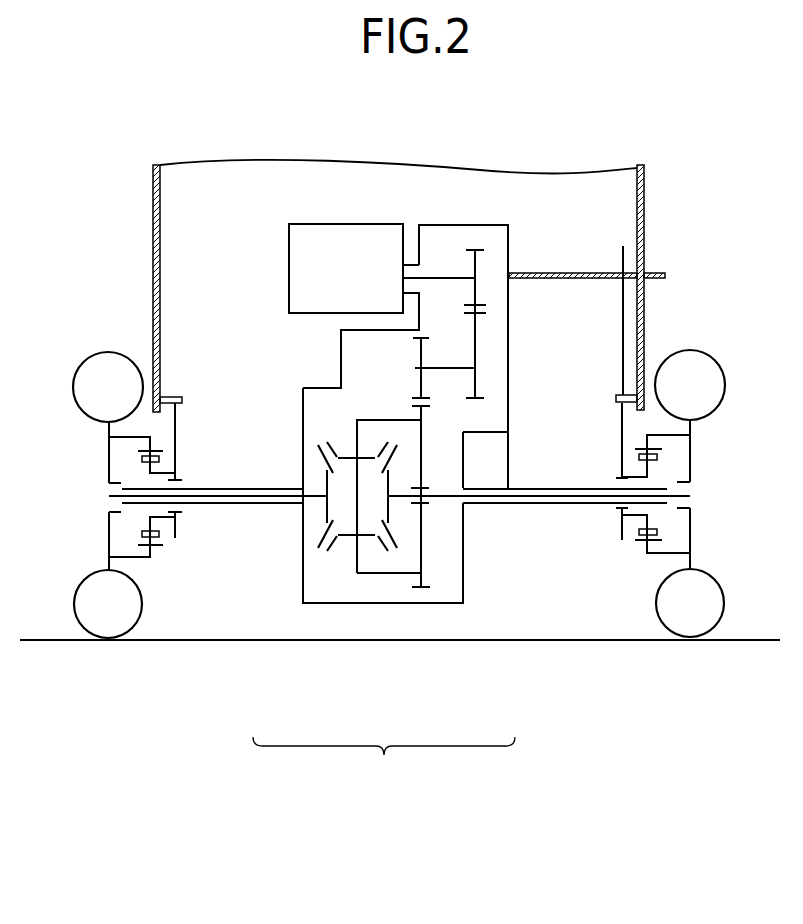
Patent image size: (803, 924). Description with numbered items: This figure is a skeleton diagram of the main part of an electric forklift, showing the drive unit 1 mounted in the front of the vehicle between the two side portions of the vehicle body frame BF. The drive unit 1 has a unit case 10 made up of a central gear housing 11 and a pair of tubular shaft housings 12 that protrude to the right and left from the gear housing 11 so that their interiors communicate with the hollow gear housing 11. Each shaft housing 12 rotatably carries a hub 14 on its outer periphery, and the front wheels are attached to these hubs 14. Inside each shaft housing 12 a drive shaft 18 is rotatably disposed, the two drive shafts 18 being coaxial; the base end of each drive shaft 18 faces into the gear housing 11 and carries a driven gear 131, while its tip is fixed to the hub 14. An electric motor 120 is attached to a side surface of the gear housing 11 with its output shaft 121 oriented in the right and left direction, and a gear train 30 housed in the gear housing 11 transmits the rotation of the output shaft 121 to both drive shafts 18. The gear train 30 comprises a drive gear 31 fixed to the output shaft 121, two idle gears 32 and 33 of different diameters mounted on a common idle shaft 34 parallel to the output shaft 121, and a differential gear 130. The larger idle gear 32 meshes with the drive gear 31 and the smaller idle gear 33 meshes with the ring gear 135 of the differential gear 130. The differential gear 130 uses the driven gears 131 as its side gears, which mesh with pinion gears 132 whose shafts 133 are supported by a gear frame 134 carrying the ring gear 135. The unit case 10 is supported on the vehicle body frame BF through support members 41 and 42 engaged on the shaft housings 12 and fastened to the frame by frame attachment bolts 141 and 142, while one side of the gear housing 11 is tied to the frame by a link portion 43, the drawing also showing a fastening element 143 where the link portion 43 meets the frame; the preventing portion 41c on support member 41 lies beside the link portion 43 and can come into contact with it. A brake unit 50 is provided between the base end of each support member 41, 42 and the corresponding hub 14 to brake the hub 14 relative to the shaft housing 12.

The drive unit 1 is at (258, 213).
The vehicle body frame BF is at (153, 219).
The unit case 10 is at (384, 762).
The gear housing 11 is at (410, 605).
The shaft housing 12 is at (220, 505).
The hub 14 is at (143, 557).
The drive shaft 18 is at (222, 490).
The gear train 30 is at (356, 383).
The drive gear 31 is at (478, 263).
The idle gear 32 is at (478, 325).
The idle gear 33 is at (421, 350).
The idle shaft 34 is at (448, 368).
The support member 41 is at (622, 440).
The preventing portion 41c is at (615, 331).
The support member 42 is at (176, 421).
The link portion 43 is at (550, 272).
The brake unit 50 is at (168, 515).
The electric motor 120 is at (340, 238).
The output shaft 121 is at (436, 278).
The differential gear 130 is at (314, 581).
The driven gear 131 is at (327, 475).
The pinion gear 132 is at (347, 457).
The shaft 133 is at (357, 428).
The gear frame 134 is at (368, 577).
The ring gear 135 is at (428, 590).
The frame attachment bolt 141 is at (616, 398).
The frame attachment bolt 142 is at (177, 397).
The bearing 143 is at (660, 273).